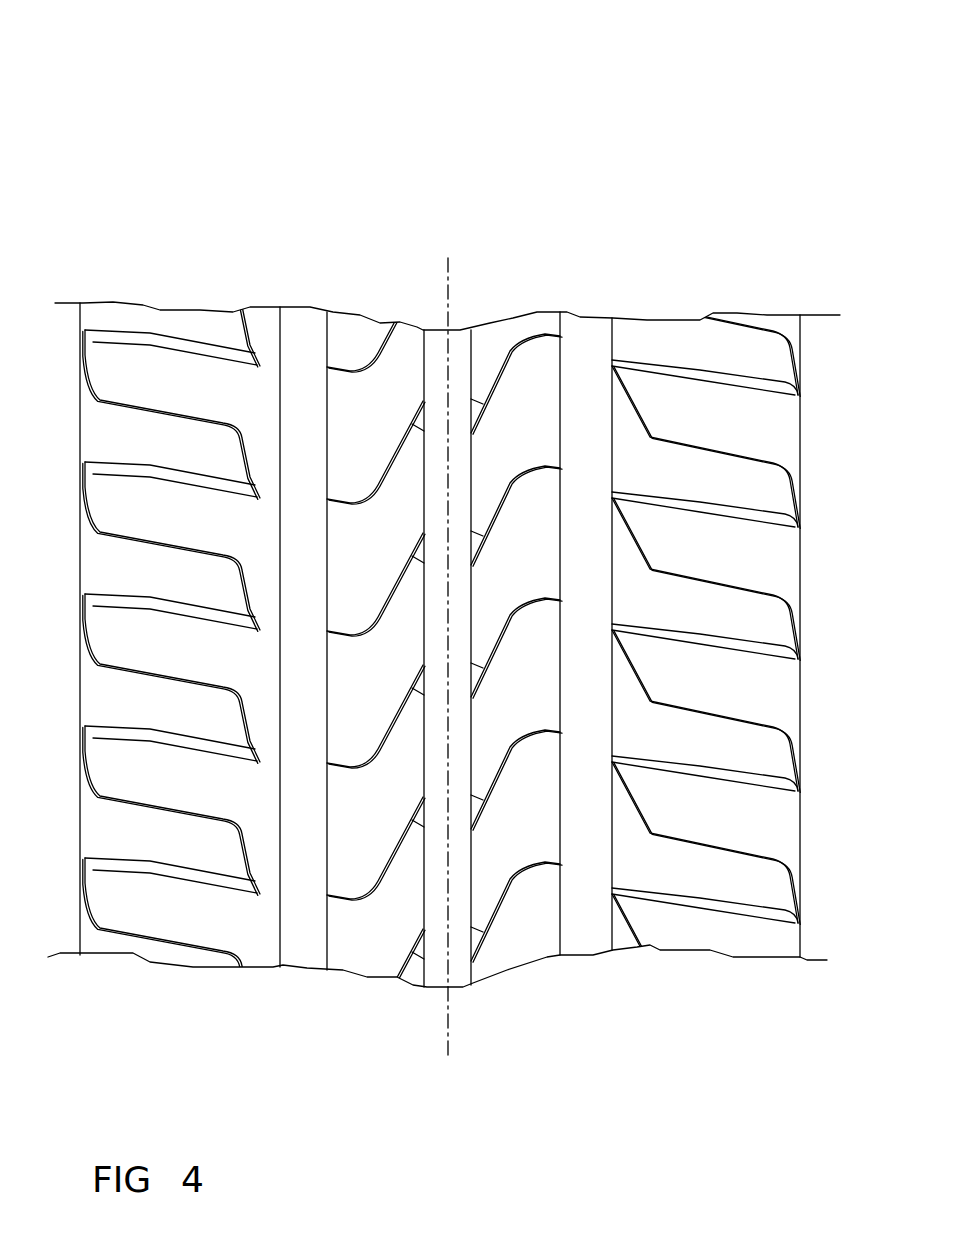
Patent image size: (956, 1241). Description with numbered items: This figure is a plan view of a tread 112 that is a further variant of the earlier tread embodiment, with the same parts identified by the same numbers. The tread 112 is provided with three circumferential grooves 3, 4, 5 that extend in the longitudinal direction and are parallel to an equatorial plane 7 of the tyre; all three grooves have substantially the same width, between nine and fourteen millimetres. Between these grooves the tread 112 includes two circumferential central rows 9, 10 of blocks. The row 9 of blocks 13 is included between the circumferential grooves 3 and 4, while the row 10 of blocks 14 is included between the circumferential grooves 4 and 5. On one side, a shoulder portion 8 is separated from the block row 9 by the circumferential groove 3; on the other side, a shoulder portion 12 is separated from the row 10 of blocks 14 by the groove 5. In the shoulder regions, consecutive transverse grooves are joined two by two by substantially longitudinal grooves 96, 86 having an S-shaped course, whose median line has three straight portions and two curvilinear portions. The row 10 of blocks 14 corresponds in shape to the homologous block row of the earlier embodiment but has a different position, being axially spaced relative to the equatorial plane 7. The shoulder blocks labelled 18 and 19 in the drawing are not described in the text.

The tread 112 is at (178, 178).
The shoulder portion 8 is at (150, 308).
The shoulder portion 12 is at (739, 302).
The circumferential groove 3 is at (305, 342).
The circumferential groove 4 is at (458, 345).
The circumferential groove 5 is at (583, 337).
The equatorial plane 7 is at (447, 287).
The circumferential central row of blocks 9 is at (361, 983).
The circumferential central row of blocks 10 is at (519, 980).
The blocks 13 is at (345, 433).
The blocks 14 is at (503, 435).
The first shoulder rib 18 is at (193, 528).
The second shoulder rib 19 is at (700, 565).
The longitudinal groove 96 is at (168, 682).
The longitudinal groove 86 is at (743, 722).